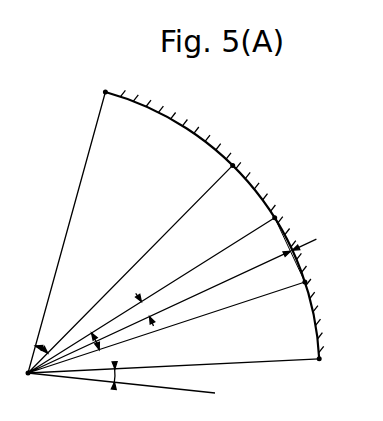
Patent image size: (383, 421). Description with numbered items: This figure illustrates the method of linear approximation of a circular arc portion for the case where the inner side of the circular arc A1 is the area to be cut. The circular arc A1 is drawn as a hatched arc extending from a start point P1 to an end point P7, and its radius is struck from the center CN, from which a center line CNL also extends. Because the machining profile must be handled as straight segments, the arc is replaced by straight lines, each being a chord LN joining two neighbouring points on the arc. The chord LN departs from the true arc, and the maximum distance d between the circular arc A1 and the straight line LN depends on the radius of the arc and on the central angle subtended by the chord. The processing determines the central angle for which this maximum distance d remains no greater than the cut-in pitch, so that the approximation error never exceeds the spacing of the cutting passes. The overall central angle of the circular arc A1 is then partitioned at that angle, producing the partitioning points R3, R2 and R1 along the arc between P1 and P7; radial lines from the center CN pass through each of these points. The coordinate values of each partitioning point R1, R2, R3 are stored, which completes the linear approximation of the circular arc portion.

The circular arc A1 is at (192, 121).
The center of the arc CN is at (169, 247).
The center line CNL is at (247, 365).
The start point of the arc P1 is at (103, 83).
The end point of the arc P7 is at (331, 365).
The partitioning point R1 is at (315, 277).
The partitioning point R2 is at (285, 210).
The partitioning point R3 is at (245, 159).
The straight line (chord) LN is at (288, 233).
The maximum distance d is at (303, 257).